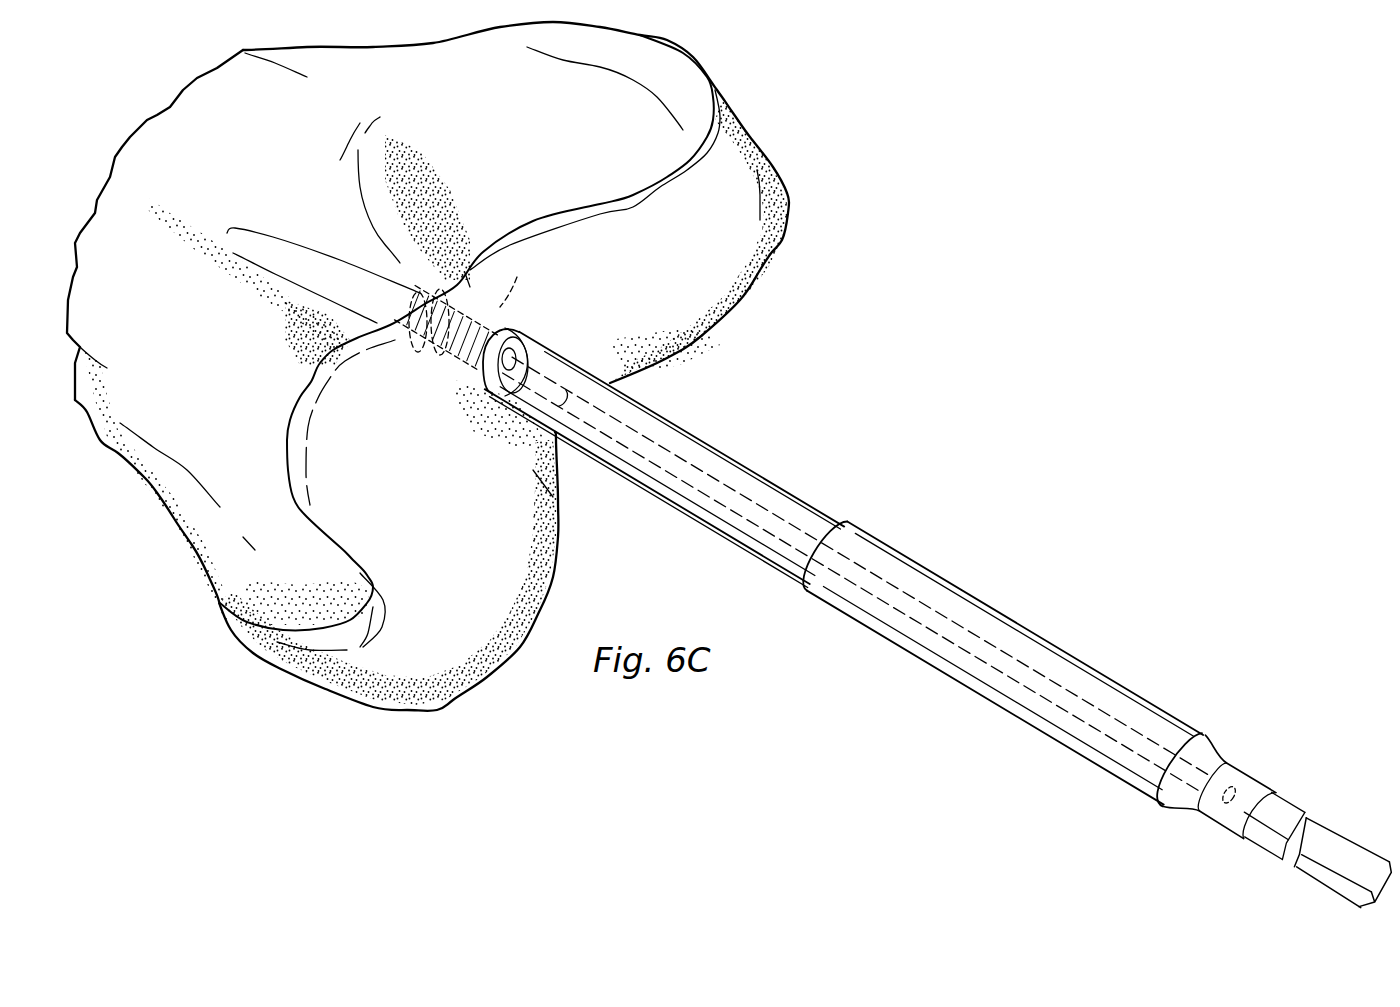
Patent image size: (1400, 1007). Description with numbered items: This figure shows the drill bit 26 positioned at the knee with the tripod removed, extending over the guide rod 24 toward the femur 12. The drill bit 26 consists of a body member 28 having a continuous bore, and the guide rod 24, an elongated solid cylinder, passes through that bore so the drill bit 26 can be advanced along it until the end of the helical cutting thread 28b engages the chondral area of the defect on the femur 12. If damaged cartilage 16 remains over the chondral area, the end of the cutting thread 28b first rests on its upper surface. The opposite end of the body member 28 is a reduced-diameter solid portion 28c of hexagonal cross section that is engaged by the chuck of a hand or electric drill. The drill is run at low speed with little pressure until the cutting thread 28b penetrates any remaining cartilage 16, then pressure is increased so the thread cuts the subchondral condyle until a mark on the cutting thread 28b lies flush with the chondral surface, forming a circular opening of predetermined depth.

The femur 12 is at (177, 330).
The cartilage 16 is at (410, 492).
The guide rod 24 is at (987, 637).
The drill bit 26 is at (948, 538).
The body member 28 is at (770, 477).
The helical cutting thread 28b is at (485, 259).
The reduced-diameter solid portion 28c is at (1352, 833).